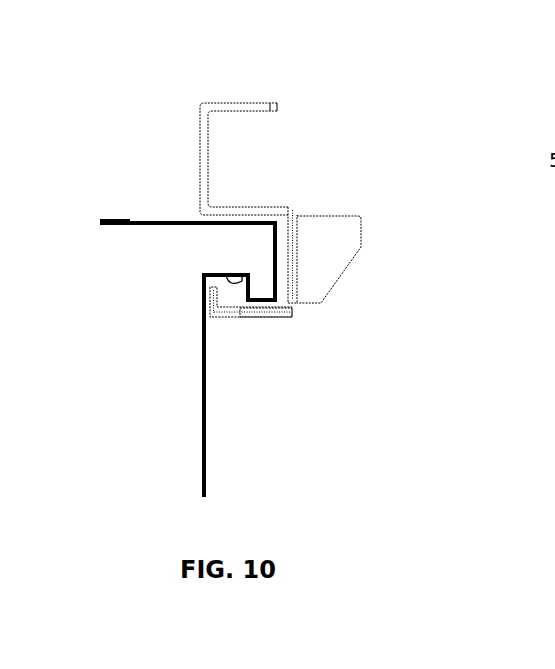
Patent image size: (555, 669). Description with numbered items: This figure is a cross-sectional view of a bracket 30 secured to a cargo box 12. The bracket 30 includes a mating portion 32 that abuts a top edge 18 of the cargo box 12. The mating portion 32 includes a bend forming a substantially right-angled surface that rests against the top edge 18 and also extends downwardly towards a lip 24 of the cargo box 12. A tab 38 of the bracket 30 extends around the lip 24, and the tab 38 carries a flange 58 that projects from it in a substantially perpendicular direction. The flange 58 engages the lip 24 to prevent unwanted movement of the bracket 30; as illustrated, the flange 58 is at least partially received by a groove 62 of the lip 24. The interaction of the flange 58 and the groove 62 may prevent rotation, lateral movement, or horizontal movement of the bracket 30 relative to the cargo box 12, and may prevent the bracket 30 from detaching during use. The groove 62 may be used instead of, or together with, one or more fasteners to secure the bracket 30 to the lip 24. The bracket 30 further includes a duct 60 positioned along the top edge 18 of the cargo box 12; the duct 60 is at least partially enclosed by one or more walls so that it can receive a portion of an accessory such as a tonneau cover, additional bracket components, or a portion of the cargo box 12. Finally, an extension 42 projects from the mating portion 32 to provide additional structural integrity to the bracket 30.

The cargo box 12 is at (142, 214).
The top edge 18 is at (122, 222).
The lip 24 is at (258, 287).
The bracket 30 is at (367, 114).
The mating portion 32 is at (252, 207).
The tab 38 is at (247, 312).
The extension 42 is at (348, 237).
The flange 58 is at (213, 298).
The duct 60 is at (222, 127).
The groove 62 is at (233, 282).